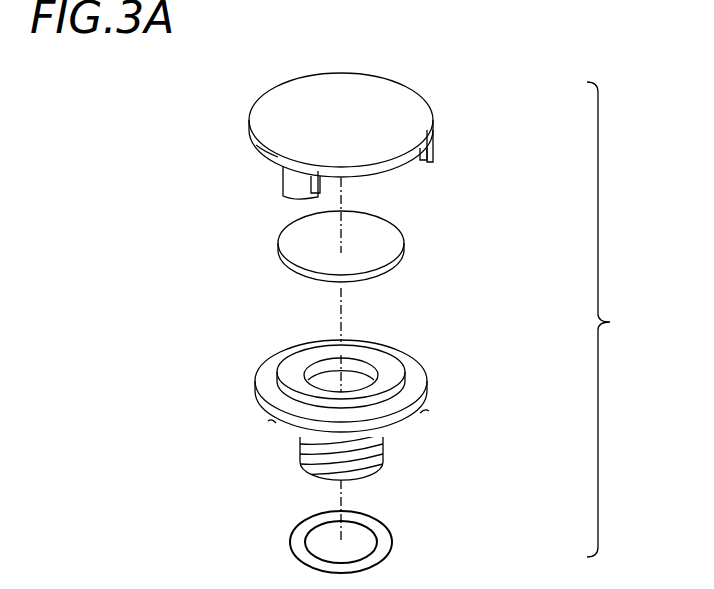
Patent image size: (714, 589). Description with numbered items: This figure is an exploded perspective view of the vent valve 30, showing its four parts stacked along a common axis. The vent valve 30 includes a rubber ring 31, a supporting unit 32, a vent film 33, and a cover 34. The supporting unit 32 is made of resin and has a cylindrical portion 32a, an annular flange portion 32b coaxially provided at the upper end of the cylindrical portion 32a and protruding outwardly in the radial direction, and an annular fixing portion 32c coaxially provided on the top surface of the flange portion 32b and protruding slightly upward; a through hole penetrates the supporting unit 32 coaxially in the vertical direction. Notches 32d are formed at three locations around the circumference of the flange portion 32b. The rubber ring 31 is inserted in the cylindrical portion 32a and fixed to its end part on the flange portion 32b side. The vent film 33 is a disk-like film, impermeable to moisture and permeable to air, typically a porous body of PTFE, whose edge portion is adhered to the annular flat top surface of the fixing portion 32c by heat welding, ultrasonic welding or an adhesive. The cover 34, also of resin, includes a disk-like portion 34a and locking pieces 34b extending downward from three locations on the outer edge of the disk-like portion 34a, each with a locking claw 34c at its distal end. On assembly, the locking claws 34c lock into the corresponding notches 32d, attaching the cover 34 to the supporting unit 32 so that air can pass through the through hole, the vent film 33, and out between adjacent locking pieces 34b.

The vent valve 30 is at (611, 319).
The rubber ring 31 is at (392, 537).
The supporting unit 32 is at (394, 391).
The cylindrical portion 32a is at (380, 460).
The annular flange portion 32b is at (407, 363).
The annular fixing portion 32c is at (367, 352).
The notch 32d is at (425, 412).
The vent film 33 is at (405, 235).
The cover 34 is at (381, 148).
The disk-like portion 34a is at (407, 98).
The locking piece 34b is at (430, 150).
The locking claw 34c is at (423, 165).